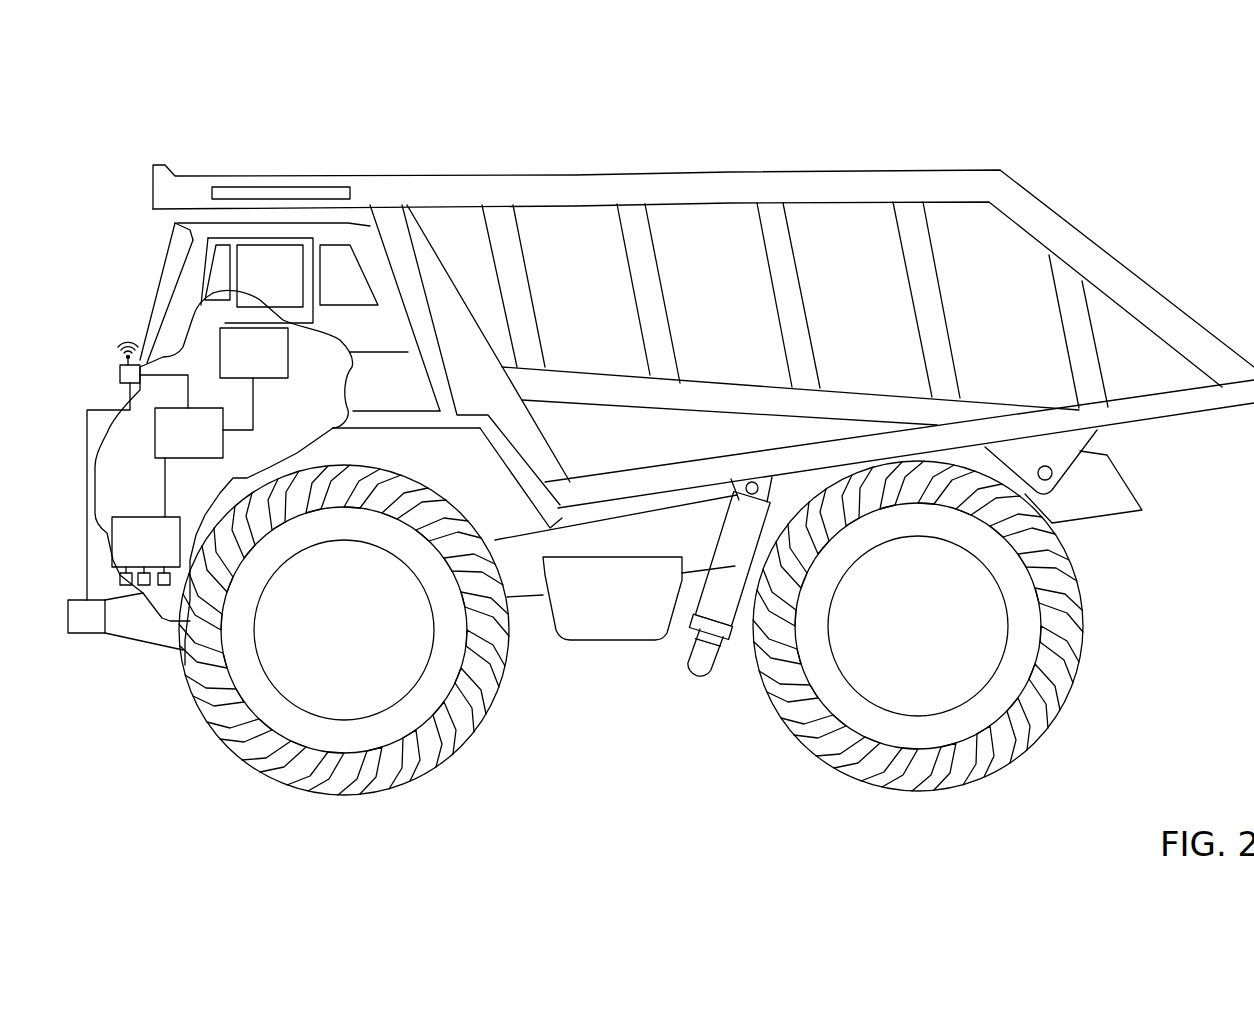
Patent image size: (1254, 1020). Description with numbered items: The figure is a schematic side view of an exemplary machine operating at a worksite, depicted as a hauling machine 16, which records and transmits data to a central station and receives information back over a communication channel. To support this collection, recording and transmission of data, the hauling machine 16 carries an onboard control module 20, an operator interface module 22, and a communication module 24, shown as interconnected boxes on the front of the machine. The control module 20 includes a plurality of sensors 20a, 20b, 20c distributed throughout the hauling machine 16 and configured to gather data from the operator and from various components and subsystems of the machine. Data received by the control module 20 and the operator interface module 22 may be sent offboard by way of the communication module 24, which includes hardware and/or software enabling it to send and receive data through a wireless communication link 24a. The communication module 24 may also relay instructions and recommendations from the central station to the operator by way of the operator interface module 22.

The hauling machine 16 is at (1188, 153).
The onboard control module 20 is at (146, 542).
The sensor 20a is at (120, 578).
The sensor 20b is at (135, 637).
The sensor 20c is at (191, 487).
The operator interface module 22 is at (254, 379).
The communication module 24 is at (181, 416).
The wireless communication link 24a is at (120, 377).